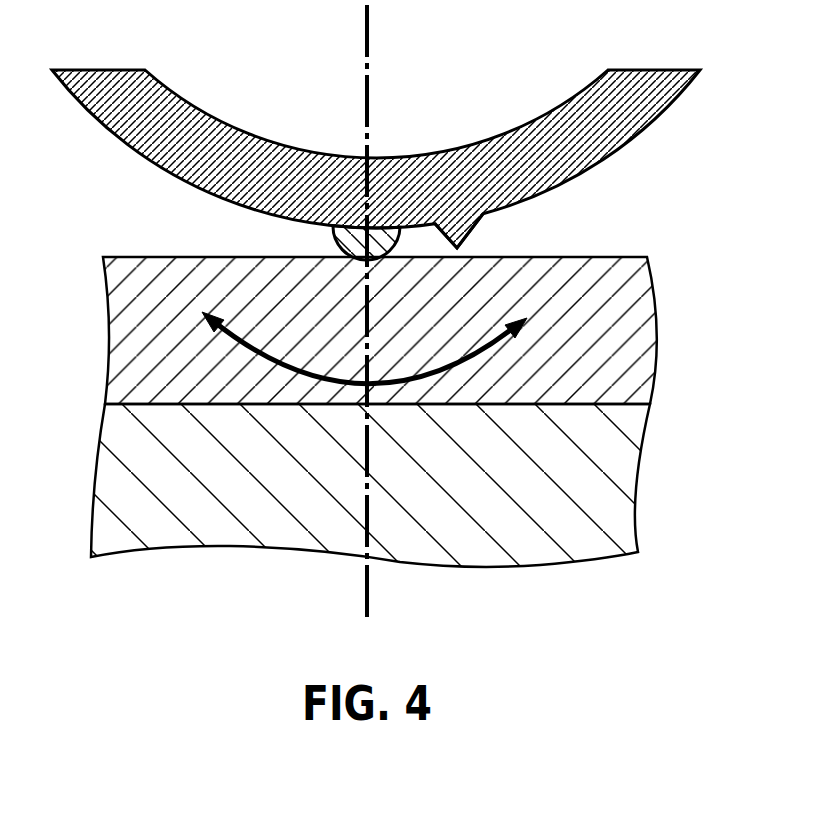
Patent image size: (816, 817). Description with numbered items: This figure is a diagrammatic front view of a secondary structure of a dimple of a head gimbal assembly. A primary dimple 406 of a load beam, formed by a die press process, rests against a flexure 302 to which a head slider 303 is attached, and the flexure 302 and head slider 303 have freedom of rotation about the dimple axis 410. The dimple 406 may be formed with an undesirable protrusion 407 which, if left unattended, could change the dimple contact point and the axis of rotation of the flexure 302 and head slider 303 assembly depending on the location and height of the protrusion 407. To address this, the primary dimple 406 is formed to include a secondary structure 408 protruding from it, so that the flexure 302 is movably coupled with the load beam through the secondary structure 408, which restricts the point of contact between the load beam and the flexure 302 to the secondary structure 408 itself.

The flexure 302 is at (127, 328).
The head slider 303 is at (113, 470).
The primary dimple 406 is at (148, 152).
The protrusion 407 is at (466, 226).
The secondary structure 408 is at (336, 243).
The dimple axis 410 is at (367, 65).